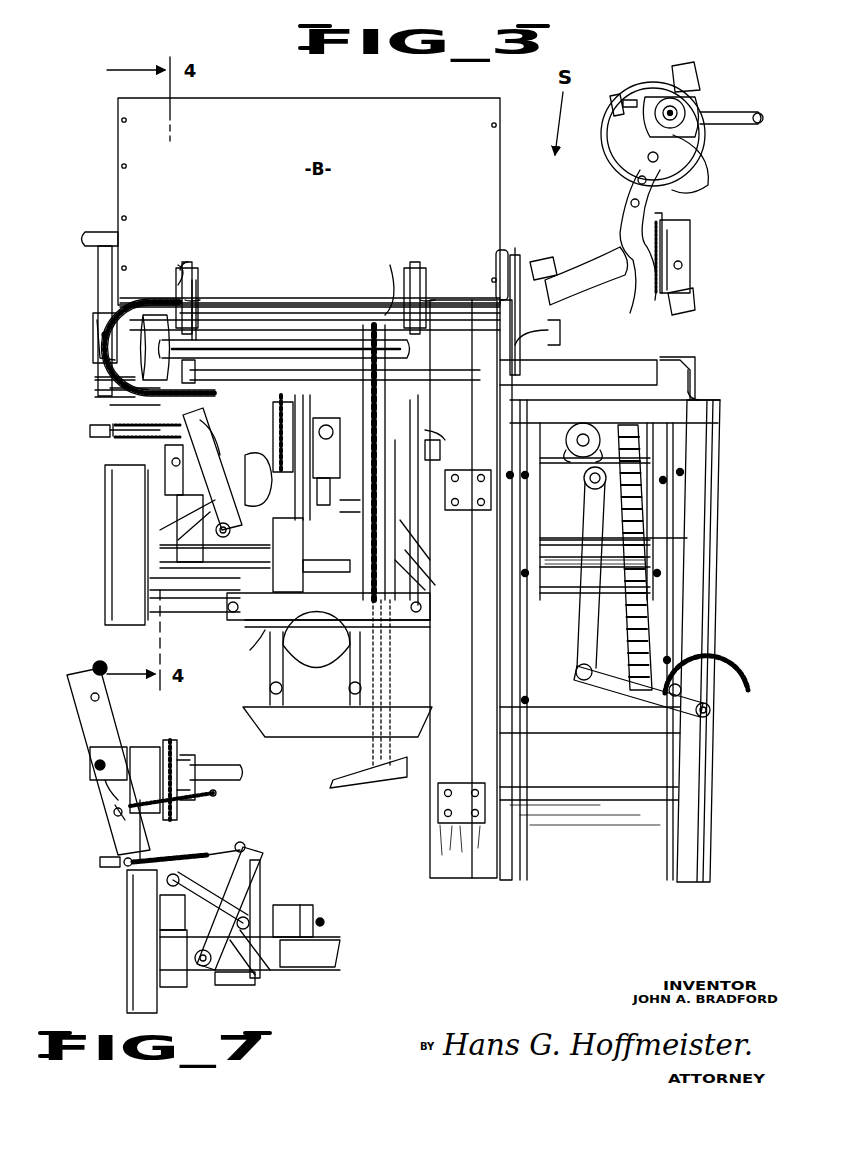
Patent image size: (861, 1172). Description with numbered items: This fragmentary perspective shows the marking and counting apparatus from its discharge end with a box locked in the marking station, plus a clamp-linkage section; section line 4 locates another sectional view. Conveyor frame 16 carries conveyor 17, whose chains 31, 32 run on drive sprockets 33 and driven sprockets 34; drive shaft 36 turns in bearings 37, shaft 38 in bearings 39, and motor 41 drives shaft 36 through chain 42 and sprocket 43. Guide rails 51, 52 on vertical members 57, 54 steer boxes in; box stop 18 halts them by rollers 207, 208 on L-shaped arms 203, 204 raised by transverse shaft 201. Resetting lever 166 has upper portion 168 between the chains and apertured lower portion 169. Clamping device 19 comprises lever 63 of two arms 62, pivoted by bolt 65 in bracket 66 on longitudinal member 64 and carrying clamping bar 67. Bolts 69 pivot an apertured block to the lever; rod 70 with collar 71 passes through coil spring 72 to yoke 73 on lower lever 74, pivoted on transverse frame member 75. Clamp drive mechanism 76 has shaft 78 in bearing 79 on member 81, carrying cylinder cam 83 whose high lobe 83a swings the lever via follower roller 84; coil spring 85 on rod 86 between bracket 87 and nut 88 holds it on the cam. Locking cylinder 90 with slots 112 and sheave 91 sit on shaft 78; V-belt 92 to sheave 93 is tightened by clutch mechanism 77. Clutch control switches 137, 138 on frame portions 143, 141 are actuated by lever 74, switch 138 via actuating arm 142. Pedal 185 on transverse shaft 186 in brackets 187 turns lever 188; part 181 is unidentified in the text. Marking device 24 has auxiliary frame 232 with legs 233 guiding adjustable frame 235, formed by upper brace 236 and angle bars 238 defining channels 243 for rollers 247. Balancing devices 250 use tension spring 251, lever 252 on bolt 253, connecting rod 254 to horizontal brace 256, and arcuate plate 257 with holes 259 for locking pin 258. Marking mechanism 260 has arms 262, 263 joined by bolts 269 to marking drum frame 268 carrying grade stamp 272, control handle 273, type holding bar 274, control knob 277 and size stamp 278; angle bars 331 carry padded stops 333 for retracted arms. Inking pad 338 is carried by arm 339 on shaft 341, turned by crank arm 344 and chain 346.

In FIG. 7, the section line 4- 4 is at (130, 760).
In FIG. 3, the conveyor frame 16 is at (103, 545).
In FIG. 3, the conveyor 17 is at (235, 298).
In FIG. 3, the box stop 18 is at (198, 270).
In FIG. 3, the clamping device 19 is at (96, 285).
In FIG. 3, the marking device 24 is at (712, 98).
In FIG. 3, the conveyor chain 31 is at (110, 406).
In FIG. 7, the conveyor chain 31 is at (182, 750).
In FIG. 3, the conveyor chain 32 is at (445, 447).
In FIG. 3, the drive sprocket 33 is at (110, 386).
In FIG. 3, the driven sprocket 34 is at (262, 306).
In FIG. 7, the driven sprocket 34 is at (188, 762).
In FIG. 3, the drive shaft 36 is at (276, 341).
In FIG. 3, the bearing 37 is at (108, 349).
In FIG. 7, the shaft 38 is at (243, 773).
In FIG. 7, the bearing 39 is at (155, 750).
In FIG. 3, the motor 41 is at (337, 675).
In FIG. 3, the chain 42 is at (385, 435).
In FIG. 3, the sprocket 43 is at (362, 345).
In FIG. 7, the guide rail 51 is at (90, 697).
In FIG. 3, the guide rail 52 is at (502, 252).
In FIG. 3, the vertical angle member 54 is at (522, 313).
In FIG. 7, the vertical member 57 is at (78, 720).
In FIG. 3, the arm 62 is at (130, 298).
In FIG. 7, the arm 62 is at (110, 808).
In FIG. 3, the lever 63 is at (95, 302).
In FIG. 7, the lever 63 is at (88, 738).
In FIG. 3, the longitudinal member 64 is at (92, 320).
In FIG. 7, the bolt 65 is at (95, 766).
In FIG. 7, the bracket 66 is at (105, 784).
In FIG. 3, the clamping bar 67 is at (84, 240).
In FIG. 7, the clamping bar 67 is at (95, 664).
In FIG. 7, the bolt 69 is at (120, 866).
In FIG. 3, the rod 70 is at (105, 445).
In FIG. 7, the rod 70 is at (98, 862).
In FIG. 3, the collar 71 is at (85, 432).
In FIG. 7, the collar 71 is at (118, 855).
In FIG. 3, the coil spring 72 is at (135, 445).
In FIG. 7, the coil spring 72 is at (125, 870).
In FIG. 3, the yoke 73 is at (208, 420).
In FIG. 7, the yoke 73 is at (255, 850).
In FIG. 3, the lower lever 74 is at (215, 440).
In FIG. 7, the lower lever 74 is at (245, 842).
In FIG. 3, the transverse frame member 75 is at (262, 540).
In FIG. 7, the transverse frame member 75 is at (272, 975).
In FIG. 3, the clamp drive mechanism 76 is at (275, 525).
In FIG. 7, the clamp drive mechanism 76 is at (285, 893).
In FIG. 3, the clutch mechanism 77 is at (432, 515).
In FIG. 3, the shaft 78 is at (335, 466).
In FIG. 7, the shaft 78 is at (325, 922).
In FIG. 3, the bearing 79 is at (312, 548).
In FIG. 7, the bearing 79 is at (318, 912).
In FIG. 3, the frame member 81 is at (313, 557).
In FIG. 7, the frame member 81 is at (338, 953).
In FIG. 3, the cylinder cam 83 is at (260, 440).
In FIG. 7, the cylinder cam 83 is at (280, 965).
In FIG. 3, the high lobe 83a is at (252, 490).
In FIG. 7, the high lobe 83a is at (208, 968).
In FIG. 3, the cam follower roller 84 is at (190, 532).
In FIG. 7, the cam follower roller 84 is at (243, 890).
In FIG. 7, the coil spring 85 is at (185, 800).
In FIG. 7, the rod 86 is at (218, 793).
In FIG. 7, the bracket 87 is at (148, 838).
In FIG. 7, the nut 88 is at (218, 797).
In FIG. 3, the locking cylinder 90 is at (418, 555).
In FIG. 3, the sheave 91 is at (394, 512).
In FIG. 3, the V-belt 92 is at (425, 578).
In FIG. 3, the sheave 93 is at (425, 593).
In FIG. 3, the slot 112 is at (465, 480).
In FIG. 3, the clutch control switch 137 is at (112, 568).
In FIG. 7, the clutch control switch 137 is at (170, 968).
In FIG. 3, the clutch control switch 138 is at (174, 525).
In FIG. 7, the clutch control switch 138 is at (170, 920).
In FIG. 3, the frame portion 141 is at (150, 515).
In FIG. 7, the frame portion 141 is at (152, 950).
In FIG. 3, the actuating arm 142 is at (170, 478).
In FIG. 7, the actuating arm 142 is at (160, 905).
In FIG. 3, the frame portion 143 is at (170, 570).
In FIG. 7, the frame portion 143 is at (200, 990).
In FIG. 3, the resetting lever 166 is at (315, 298).
In FIG. 3, the upper portion 168 is at (338, 298).
In FIG. 3, the lower portion 169 is at (335, 405).
In FIG. 3, the link 181 is at (241, 652).
In FIG. 3, the pedal 185 is at (390, 780).
In FIG. 3, the transverse shaft 186 is at (262, 625).
In FIG. 3, the bracket 187 is at (228, 600).
In FIG. 3, the lever 188 is at (193, 599).
In FIG. 3, the transverse shaft 201 is at (257, 388).
In FIG. 3, the L-shaped arm 203 is at (217, 388).
In FIG. 3, the L-shaped arm 204 is at (390, 268).
In FIG. 3, the roller 207 is at (180, 268).
In FIG. 3, the roller 208 is at (394, 262).
In FIG. 3, the auxiliary frame 232 is at (724, 485).
In FIG. 3, the supporting leg 233 is at (655, 773).
In FIG. 3, the adjustable frame 235 is at (695, 360).
In FIG. 3, the upper brace 236 is at (598, 371).
In FIG. 3, the vertical angle bar 238 is at (690, 368).
In FIG. 3, the channel 243 is at (700, 380).
In FIG. 3, the roller 247 is at (700, 393).
In FIG. 3, the balancing device 250 is at (565, 690).
In FIG. 3, the tension spring 251 is at (687, 538).
In FIG. 3, the lever 252 is at (630, 700).
In FIG. 3, the bolt 253 is at (710, 710).
In FIG. 3, the connecting rod 254 is at (585, 612).
In FIG. 3, the horizontal brace 256 is at (584, 488).
In FIG. 3, the plate 257 is at (725, 678).
In FIG. 3, the locking pin 258 is at (680, 660).
In FIG. 3, the hole 259 is at (700, 680).
In FIG. 3, the marking mechanism 260 is at (715, 157).
In FIG. 3, the arm 262 is at (622, 235).
In FIG. 3, the arm 263 is at (620, 248).
In FIG. 3, the marking drum frame 268 is at (697, 66).
In FIG. 3, the bolt 269 is at (638, 165).
In FIG. 3, the grade stamp 272 is at (635, 145).
In FIG. 3, the control handle 273 is at (740, 125).
In FIG. 3, the type holding bar 274 is at (615, 93).
In FIG. 3, the control knob 277 is at (660, 98).
In FIG. 3, the size stamp 278 is at (690, 170).
In FIG. 3, the angle bar 331 is at (685, 262).
In FIG. 3, the padded stop 333 is at (685, 300).
In FIG. 3, the inking pad 338 is at (540, 262).
In FIG. 3, the arm 339 is at (605, 282).
In FIG. 3, the shaft 341 is at (663, 230).
In FIG. 3, the crank arm 344 is at (663, 215).
In FIG. 3, the chain 346 is at (668, 250).